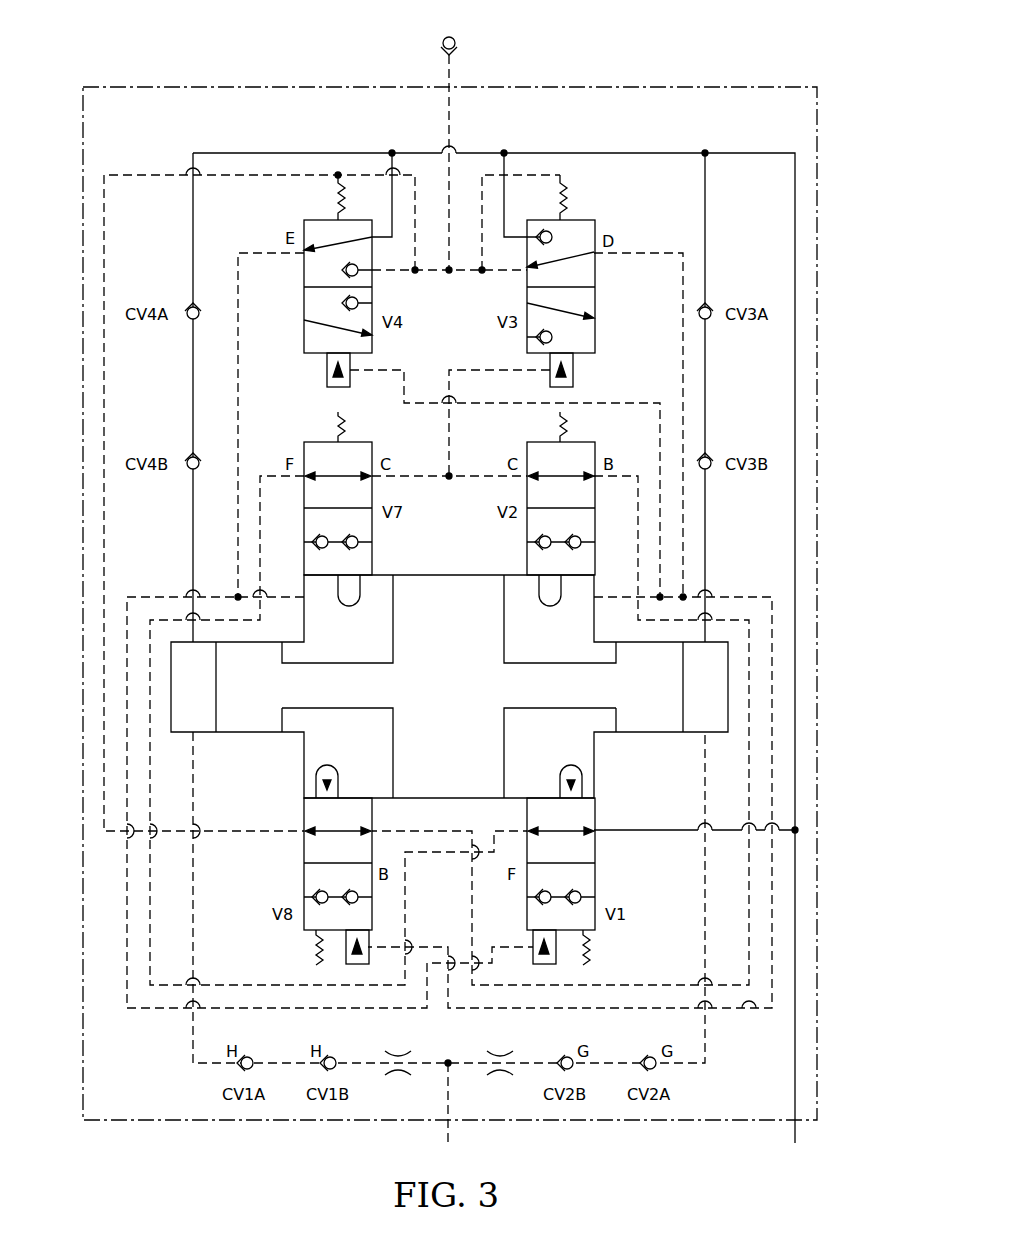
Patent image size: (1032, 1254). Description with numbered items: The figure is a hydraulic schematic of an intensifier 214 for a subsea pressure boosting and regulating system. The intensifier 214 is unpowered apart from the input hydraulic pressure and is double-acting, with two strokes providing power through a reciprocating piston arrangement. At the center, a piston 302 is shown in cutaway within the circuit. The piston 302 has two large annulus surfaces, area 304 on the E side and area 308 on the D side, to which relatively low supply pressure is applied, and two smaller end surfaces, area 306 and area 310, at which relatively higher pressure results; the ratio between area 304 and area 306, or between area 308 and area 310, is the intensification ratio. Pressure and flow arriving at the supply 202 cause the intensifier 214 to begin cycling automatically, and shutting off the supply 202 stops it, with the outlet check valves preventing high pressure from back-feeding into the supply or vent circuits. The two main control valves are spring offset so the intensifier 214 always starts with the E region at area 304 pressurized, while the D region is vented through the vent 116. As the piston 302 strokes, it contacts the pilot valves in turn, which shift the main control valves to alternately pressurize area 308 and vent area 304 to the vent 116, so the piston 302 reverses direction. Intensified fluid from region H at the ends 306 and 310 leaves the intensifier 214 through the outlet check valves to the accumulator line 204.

The vent 116 is at (453, 71).
The intensifier 214 is at (720, 83).
The supply 202 is at (797, 1131).
The accumulator line 204 is at (447, 1131).
The piston 302 is at (472, 700).
The large surface area (E annulus area) 304 is at (393, 622).
The large surface area (D annulus area) 308 is at (505, 622).
The smaller surface area (piston end) 310 is at (216, 678).
The smaller surface area (piston end) 306 is at (683, 678).